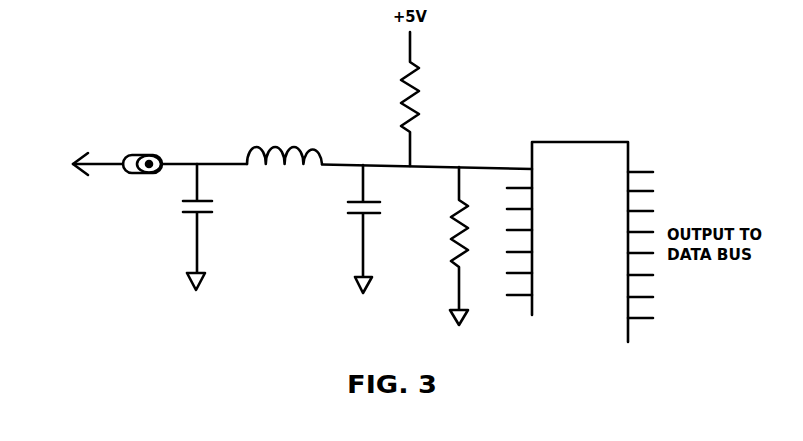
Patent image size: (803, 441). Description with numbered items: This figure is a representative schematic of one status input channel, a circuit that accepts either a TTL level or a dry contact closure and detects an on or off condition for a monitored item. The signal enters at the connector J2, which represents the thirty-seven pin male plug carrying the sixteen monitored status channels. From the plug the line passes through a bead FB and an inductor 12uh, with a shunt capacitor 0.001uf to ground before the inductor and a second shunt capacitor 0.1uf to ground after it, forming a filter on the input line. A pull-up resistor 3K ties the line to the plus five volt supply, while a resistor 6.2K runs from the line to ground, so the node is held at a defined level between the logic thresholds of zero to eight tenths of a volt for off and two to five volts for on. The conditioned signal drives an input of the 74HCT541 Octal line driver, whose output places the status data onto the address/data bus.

The DC-37P plug J2 is at (65, 164).
The ferrite bead FB is at (142, 153).
The 0.001 uF capacitor 0.001uf is at (157, 227).
The 12 uH inductor 12uh is at (284, 146).
The 0.1 uF capacitor 0.1uf is at (335, 229).
The 3K pull-up resistor 3K is at (423, 99).
The 6.2K resistor 6.2K is at (435, 246).
The Octal line driver 74HCT541 is at (579, 253).